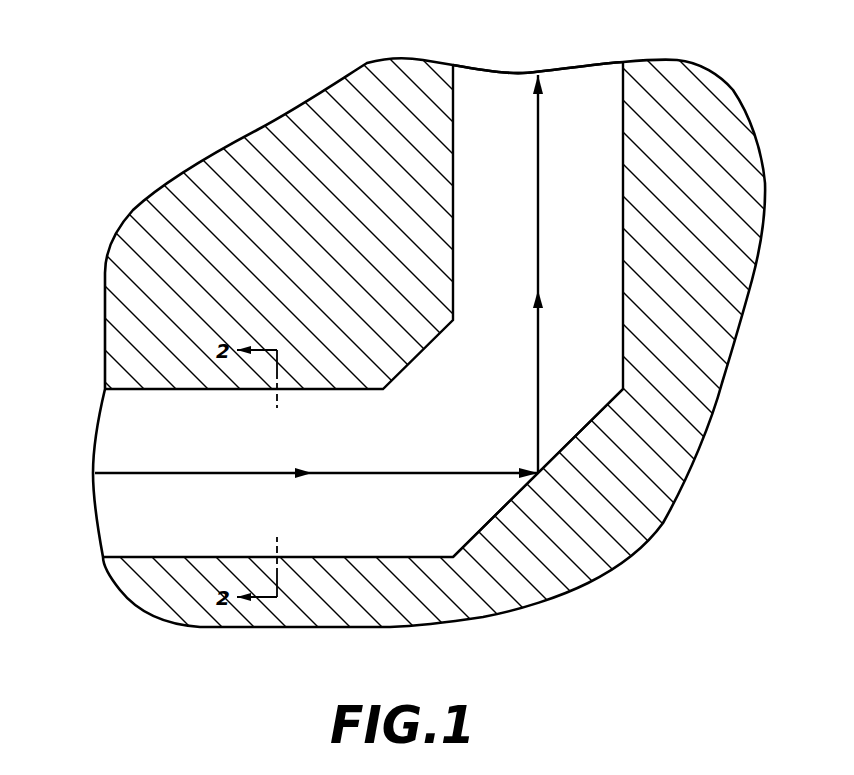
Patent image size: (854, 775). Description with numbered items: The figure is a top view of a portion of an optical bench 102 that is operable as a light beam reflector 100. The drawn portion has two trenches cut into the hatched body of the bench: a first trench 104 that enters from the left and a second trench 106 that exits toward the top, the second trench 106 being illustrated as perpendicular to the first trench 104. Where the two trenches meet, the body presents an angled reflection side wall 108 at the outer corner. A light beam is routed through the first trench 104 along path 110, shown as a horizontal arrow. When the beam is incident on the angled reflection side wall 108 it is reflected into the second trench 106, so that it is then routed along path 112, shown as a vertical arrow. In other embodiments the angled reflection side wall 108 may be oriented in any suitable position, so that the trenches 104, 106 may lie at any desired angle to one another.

The light beam reflector 100 is at (688, 585).
The optical bench 102 is at (577, 578).
The first trench 104 is at (128, 503).
The second trench 106 is at (502, 103).
The angled reflection side wall 108 is at (490, 527).
The path 110 is at (243, 473).
The path 112 is at (538, 358).